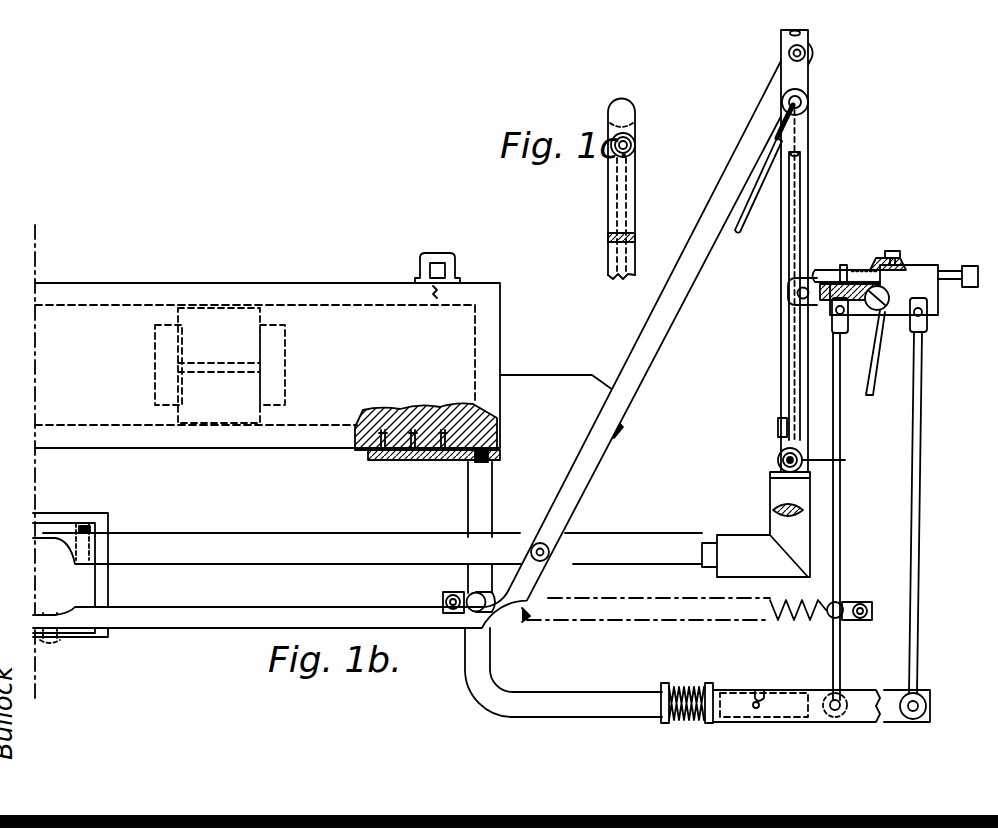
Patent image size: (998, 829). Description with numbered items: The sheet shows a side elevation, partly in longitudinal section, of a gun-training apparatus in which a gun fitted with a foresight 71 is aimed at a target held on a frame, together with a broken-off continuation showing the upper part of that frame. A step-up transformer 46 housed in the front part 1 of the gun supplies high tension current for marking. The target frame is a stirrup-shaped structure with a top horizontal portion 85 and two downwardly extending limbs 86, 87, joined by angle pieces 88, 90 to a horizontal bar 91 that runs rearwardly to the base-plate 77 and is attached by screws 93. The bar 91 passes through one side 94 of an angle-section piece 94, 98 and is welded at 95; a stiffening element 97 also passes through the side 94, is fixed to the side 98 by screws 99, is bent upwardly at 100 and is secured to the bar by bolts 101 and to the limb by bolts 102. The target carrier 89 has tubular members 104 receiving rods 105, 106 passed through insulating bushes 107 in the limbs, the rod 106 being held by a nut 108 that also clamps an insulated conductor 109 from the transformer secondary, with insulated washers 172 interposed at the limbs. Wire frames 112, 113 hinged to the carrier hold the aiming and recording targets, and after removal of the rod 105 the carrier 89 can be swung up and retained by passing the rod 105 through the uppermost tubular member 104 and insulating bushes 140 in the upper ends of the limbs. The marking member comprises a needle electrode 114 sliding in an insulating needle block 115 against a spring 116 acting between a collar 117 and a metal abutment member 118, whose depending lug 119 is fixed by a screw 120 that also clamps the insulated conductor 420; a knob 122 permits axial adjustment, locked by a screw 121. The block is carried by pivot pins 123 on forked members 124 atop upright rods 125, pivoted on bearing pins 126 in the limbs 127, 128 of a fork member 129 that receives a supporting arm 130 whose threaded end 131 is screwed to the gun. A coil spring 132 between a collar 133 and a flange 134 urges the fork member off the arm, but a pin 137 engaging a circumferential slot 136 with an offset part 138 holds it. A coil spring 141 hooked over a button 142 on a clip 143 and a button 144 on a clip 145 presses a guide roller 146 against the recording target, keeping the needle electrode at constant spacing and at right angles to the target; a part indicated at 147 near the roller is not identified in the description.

In FIG. 1B, the front part of the gun 1 is at (285, 283).
In FIG. 1B, the step-up transformer 46 is at (175, 325).
In FIG. 1B, the foresight 71 is at (428, 258).
In FIG. 1B, the base-plate 77 is at (52, 513).
In FIG. 1C, the top horizontal portion 85 is at (626, 111).
In FIG. 1B, the downwardly extending limb 86 is at (808, 78).
In FIG. 1C, the downwardly extending limb 86 is at (636, 196).
In FIG. 1B, the downwardly extending limb 87 is at (806, 160).
In FIG. 1C, the downwardly extending limb 87 is at (615, 249).
In FIG. 1B, the angle piece 88 is at (772, 493).
In FIG. 1B, the target carrier 89 is at (795, 372).
In FIG. 1C, the target carrier 89 is at (630, 241).
In FIG. 1B, the angle piece 90 is at (748, 541).
In FIG. 1B, the horizontal bar 91 is at (637, 535).
In FIG. 1B, the screws 93 is at (85, 524).
In FIG. 1B, the side of angle-section piece 94 is at (105, 596).
In FIG. 1B, the weld 95 is at (115, 535).
In FIG. 1B, the stiffening element 97 is at (285, 612).
In FIG. 1B, the side of angle-section piece 98 is at (103, 638).
In FIG. 1B, the screws 99 is at (50, 640).
In FIG. 1B, the upward bend 100 is at (505, 623).
In FIG. 1B, the bolts 101 is at (537, 543).
In FIG. 1B, the bolts 102 is at (808, 51).
In FIG. 1B, the tubular members 104 is at (778, 426).
In FIG. 1C, the tubular members 104 is at (636, 137).
In FIG. 1B, the rod 105 is at (778, 460).
In FIG. 1C, the rod 105 is at (636, 150).
In FIG. 1B, the rod 106 is at (785, 106).
In FIG. 1B, the insulating bushes 107 is at (839, 458).
In FIG. 1B, the nut 108 is at (808, 112).
In FIG. 1B, the insulated conductor 109 is at (748, 195).
In FIG. 1B, the wire frame 112 is at (784, 233).
In FIG. 1B, the wire frame 113 is at (805, 181).
In FIG. 1B, the needle electrode 114 is at (813, 268).
In FIG. 1B, the needle block 115 is at (935, 292).
In FIG. 1B, the spring 116 is at (860, 266).
In FIG. 1B, the collar 117 is at (843, 265).
In FIG. 1B, the metal abutment member 118 is at (872, 258).
In FIG. 1B, the depending lug 119 is at (874, 320).
In FIG. 1B, the screw 120 is at (889, 300).
In FIG. 1B, the screw 121 is at (895, 253).
In FIG. 1B, the knob 122 is at (968, 266).
In FIG. 1B, the pivot pins 123 is at (832, 311).
In FIG. 1B, the forked members 124 is at (836, 322).
In FIG. 1B, the upright rods 125 is at (912, 440).
In FIG. 1B, the bearing pins 126 is at (840, 700).
In FIG. 1B, the limb of fork member 127 is at (870, 692).
In FIG. 1B, the limb of fork member 128 is at (930, 700).
In FIG. 1B, the fork member 129 is at (817, 683).
In FIG. 1B, the supporting arm 130 is at (593, 692).
In FIG. 1B, the threaded end 131 is at (495, 462).
In FIG. 1B, the coil spring 132 is at (682, 686).
In FIG. 1B, the collar 133 is at (663, 684).
In FIG. 1B, the flange 134 is at (710, 684).
In FIG. 1B, the circumferential slot 136 is at (765, 690).
In FIG. 1B, the pin 137 is at (752, 700).
In FIG. 1B, the offset part 138 is at (761, 705).
In FIG. 1C, the insulating bushes 140 is at (612, 151).
In FIG. 1B, the coil spring 141 is at (798, 623).
In FIG. 1B, the button 142 is at (466, 595).
In FIG. 1B, the clip 143 is at (443, 604).
In FIG. 1B, the button 144 is at (835, 602).
In FIG. 1B, the clip 145 is at (855, 602).
In FIG. 1B, the guide roller 146 is at (791, 287).
In FIG. 1B, the pivot 147 is at (795, 306).
In FIG. 1B, the insulated washers 172 is at (808, 99).
In FIG. 1B, the insulated conductor 420 is at (871, 372).